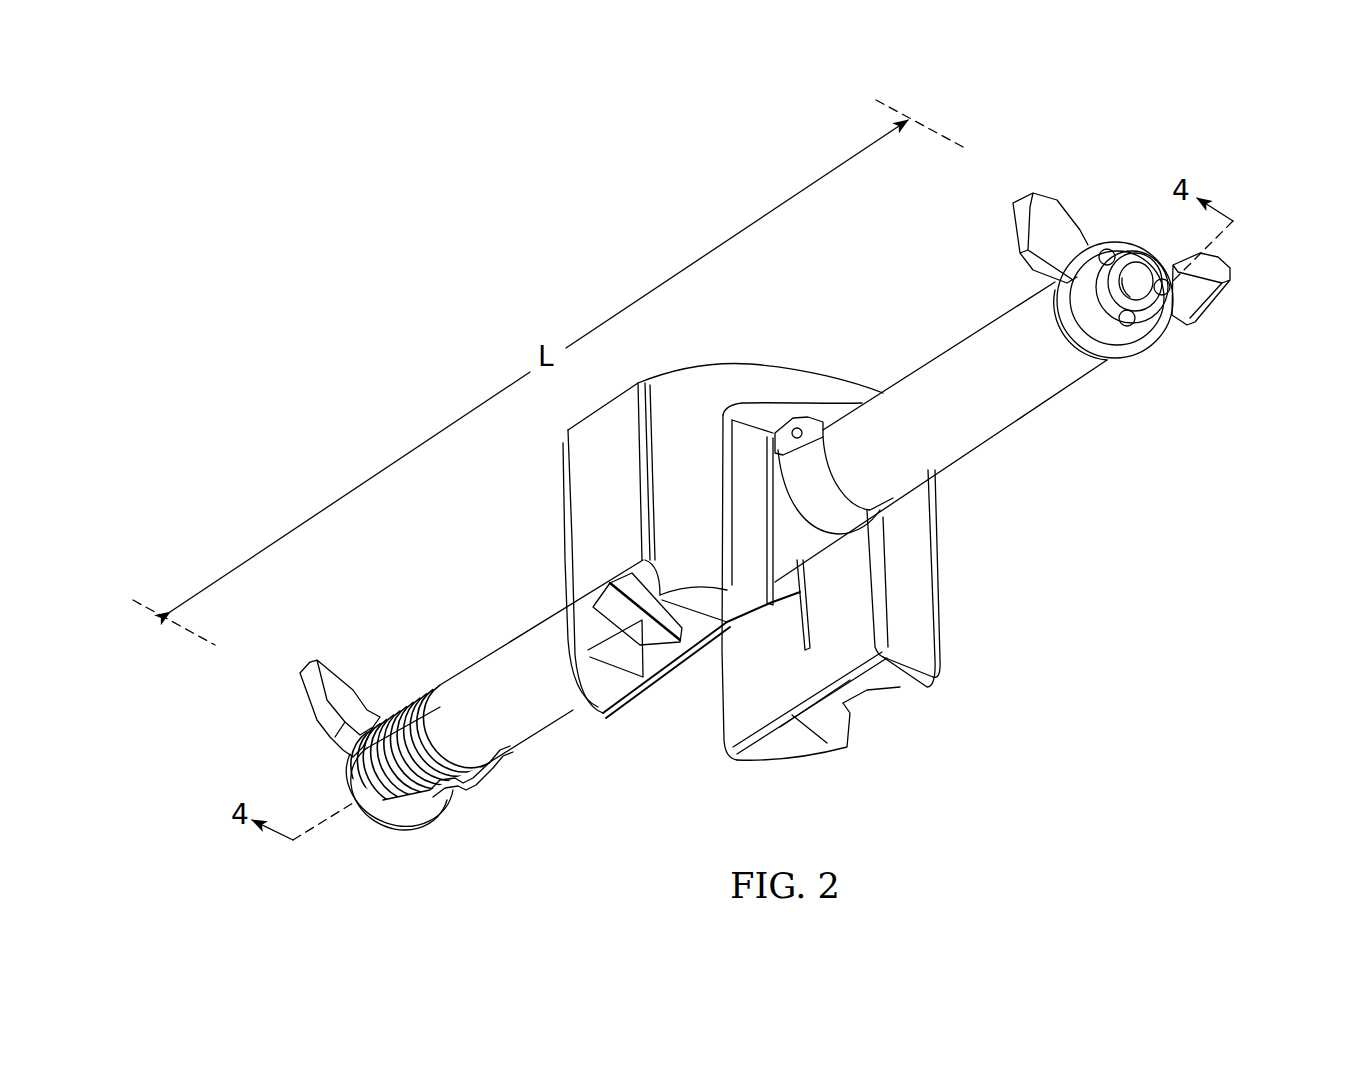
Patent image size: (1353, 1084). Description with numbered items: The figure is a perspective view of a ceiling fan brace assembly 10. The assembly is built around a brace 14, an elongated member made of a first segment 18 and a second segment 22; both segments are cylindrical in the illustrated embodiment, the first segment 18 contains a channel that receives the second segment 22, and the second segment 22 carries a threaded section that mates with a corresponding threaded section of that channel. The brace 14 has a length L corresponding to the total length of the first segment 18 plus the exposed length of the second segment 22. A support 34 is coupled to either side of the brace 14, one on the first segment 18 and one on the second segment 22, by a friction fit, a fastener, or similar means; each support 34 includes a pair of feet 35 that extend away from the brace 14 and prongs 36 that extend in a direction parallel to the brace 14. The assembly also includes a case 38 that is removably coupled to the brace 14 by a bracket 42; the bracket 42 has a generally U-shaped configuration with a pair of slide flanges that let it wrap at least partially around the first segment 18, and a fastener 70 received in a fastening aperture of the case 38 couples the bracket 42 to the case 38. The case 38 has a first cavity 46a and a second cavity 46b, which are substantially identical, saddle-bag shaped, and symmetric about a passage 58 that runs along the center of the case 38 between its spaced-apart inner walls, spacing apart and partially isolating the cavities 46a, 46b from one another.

The ceiling fan brace assembly 10 is at (232, 325).
The brace 14 is at (1043, 415).
The first segment 18 is at (965, 340).
The second segment 22 is at (433, 710).
The support 34 is at (1050, 185).
The feet 35 is at (1020, 230).
The prongs 36 is at (1104, 249).
The case 38 is at (690, 362).
The bracket 42 is at (830, 517).
The first cavity 46a is at (920, 573).
The second cavity 46b is at (588, 505).
The passage 58 is at (687, 680).
The fastener 70 is at (797, 427).